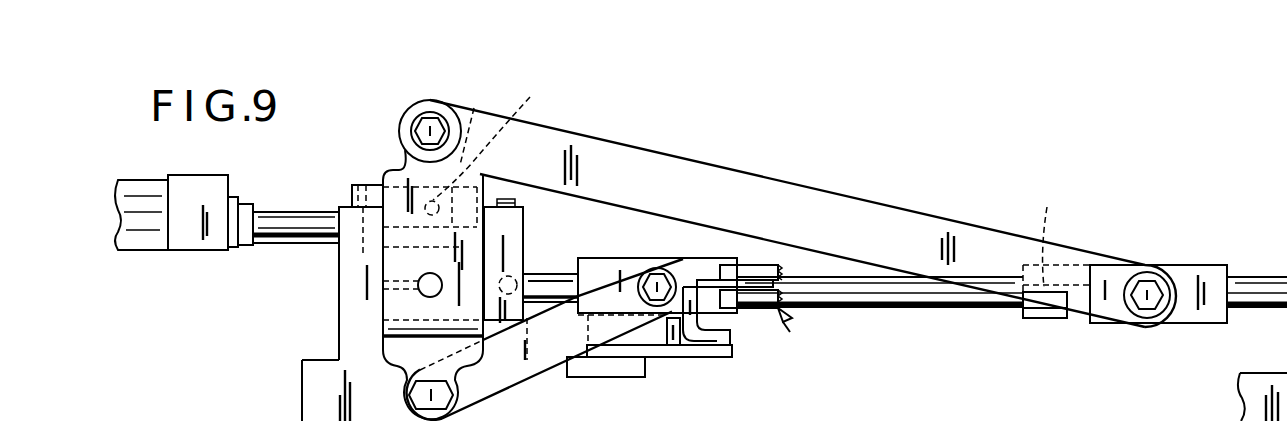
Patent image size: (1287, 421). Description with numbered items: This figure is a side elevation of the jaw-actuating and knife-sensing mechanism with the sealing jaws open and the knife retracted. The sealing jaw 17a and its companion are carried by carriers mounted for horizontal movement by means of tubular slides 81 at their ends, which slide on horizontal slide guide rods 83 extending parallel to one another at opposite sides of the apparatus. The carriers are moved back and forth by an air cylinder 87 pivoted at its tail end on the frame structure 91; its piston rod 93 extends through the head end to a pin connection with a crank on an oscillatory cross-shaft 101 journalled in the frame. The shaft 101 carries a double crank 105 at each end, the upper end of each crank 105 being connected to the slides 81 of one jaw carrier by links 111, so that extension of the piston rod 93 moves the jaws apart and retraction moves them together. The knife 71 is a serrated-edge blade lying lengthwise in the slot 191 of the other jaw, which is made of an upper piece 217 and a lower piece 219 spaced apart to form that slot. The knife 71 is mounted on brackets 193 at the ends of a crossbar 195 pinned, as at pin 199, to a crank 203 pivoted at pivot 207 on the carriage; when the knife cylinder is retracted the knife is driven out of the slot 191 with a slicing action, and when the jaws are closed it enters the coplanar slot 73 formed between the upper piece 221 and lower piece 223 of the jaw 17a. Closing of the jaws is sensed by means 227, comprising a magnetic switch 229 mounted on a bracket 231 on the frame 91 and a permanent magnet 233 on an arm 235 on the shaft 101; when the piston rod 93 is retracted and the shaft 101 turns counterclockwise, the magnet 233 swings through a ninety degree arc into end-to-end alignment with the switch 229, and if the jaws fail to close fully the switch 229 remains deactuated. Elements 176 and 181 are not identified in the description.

The air cylinder 87 is at (163, 182).
The piston rod 93 is at (293, 211).
The double crank 105 is at (353, 185).
The frame structure 91 is at (228, 420).
The oscillatory cross-shaft 101 is at (424, 294).
The bracket 231 is at (375, 227).
The magnetic switch 229 is at (493, 124).
The means for sensing movement of the sealing jaws to closed position 227 is at (512, 141).
The links 111 is at (878, 208).
The brackets 193 is at (570, 298).
The permanent magnet 233 is at (517, 262).
The arm 235 is at (517, 297).
The tubular slides 81 is at (603, 258).
The slide guide rods 83 is at (933, 307).
The upper piece 217 is at (748, 264).
The slot 191 is at (781, 290).
The lower piece 219 is at (785, 312).
The lug 176 is at (790, 318).
The knife 71 is at (762, 312).
The crossbar 195 is at (730, 345).
The pin 199 is at (722, 357).
The crank 203 is at (668, 346).
The pivot 207 is at (677, 357).
The base 181 is at (613, 378).
The slot 73 is at (1035, 233).
The upper piece 221 is at (1055, 267).
The lower piece 223 is at (1056, 318).
The sealing jaw 17a is at (1026, 320).